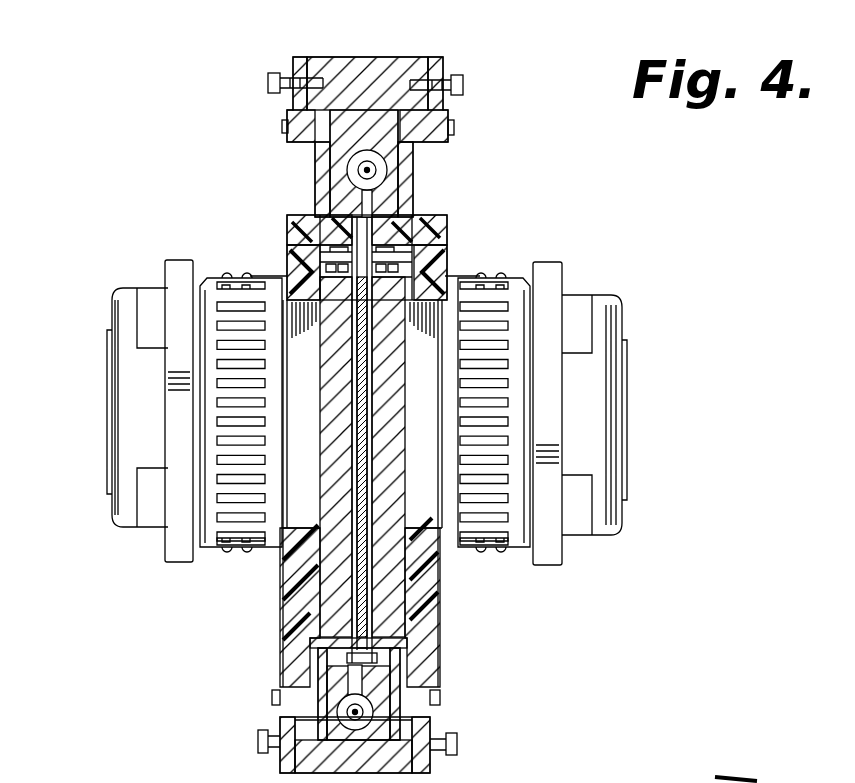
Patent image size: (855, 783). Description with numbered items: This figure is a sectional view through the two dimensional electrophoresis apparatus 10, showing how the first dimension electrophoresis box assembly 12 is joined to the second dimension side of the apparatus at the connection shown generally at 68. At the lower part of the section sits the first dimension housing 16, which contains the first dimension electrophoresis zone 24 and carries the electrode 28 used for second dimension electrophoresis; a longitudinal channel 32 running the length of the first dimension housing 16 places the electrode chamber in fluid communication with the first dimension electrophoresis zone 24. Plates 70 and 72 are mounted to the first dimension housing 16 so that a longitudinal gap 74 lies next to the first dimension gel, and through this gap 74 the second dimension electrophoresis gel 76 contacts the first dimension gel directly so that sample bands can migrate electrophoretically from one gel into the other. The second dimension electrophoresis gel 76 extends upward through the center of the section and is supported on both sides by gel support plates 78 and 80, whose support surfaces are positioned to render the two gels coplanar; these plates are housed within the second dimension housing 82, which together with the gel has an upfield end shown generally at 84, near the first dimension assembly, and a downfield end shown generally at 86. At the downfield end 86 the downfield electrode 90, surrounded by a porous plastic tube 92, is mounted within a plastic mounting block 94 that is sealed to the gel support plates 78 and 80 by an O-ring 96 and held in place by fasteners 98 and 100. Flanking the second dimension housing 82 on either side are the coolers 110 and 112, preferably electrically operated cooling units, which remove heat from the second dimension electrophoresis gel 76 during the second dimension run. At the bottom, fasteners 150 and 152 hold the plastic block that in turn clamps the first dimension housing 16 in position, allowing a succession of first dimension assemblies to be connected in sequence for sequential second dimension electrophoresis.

The two dimensional electrophoresis apparatus 10 is at (462, 225).
The first dimension electrophoresis box assembly 12 is at (440, 552).
The first dimension housing 16 is at (333, 678).
The first dimension electrophoresis zone 24 is at (440, 603).
The electrode 28 is at (366, 706).
The longitudinal channel 32 is at (395, 662).
The connection 68 is at (276, 660).
The plate 70 is at (440, 640).
The plate 72 is at (330, 640).
The longitudinal gap 74 is at (418, 533).
The second dimension electrophoresis gel 76 is at (363, 352).
The gel support plate 78 is at (352, 445).
The gel support plate 80 is at (363, 397).
The second dimension housing 82 is at (282, 572).
The upfield end 84 is at (452, 692).
The downfield end 86 is at (272, 241).
The downfield electrode 90 is at (372, 172).
The porous plastic tube 92 is at (348, 165).
The plastic mounting block 94 is at (367, 92).
The O-ring 96 is at (454, 110).
The fastener 98 is at (461, 78).
The fastener 100 is at (268, 82).
The cooler 110 is at (622, 413).
The cooler 112 is at (112, 386).
The fastener 150 is at (258, 741).
The fastener 152 is at (457, 749).